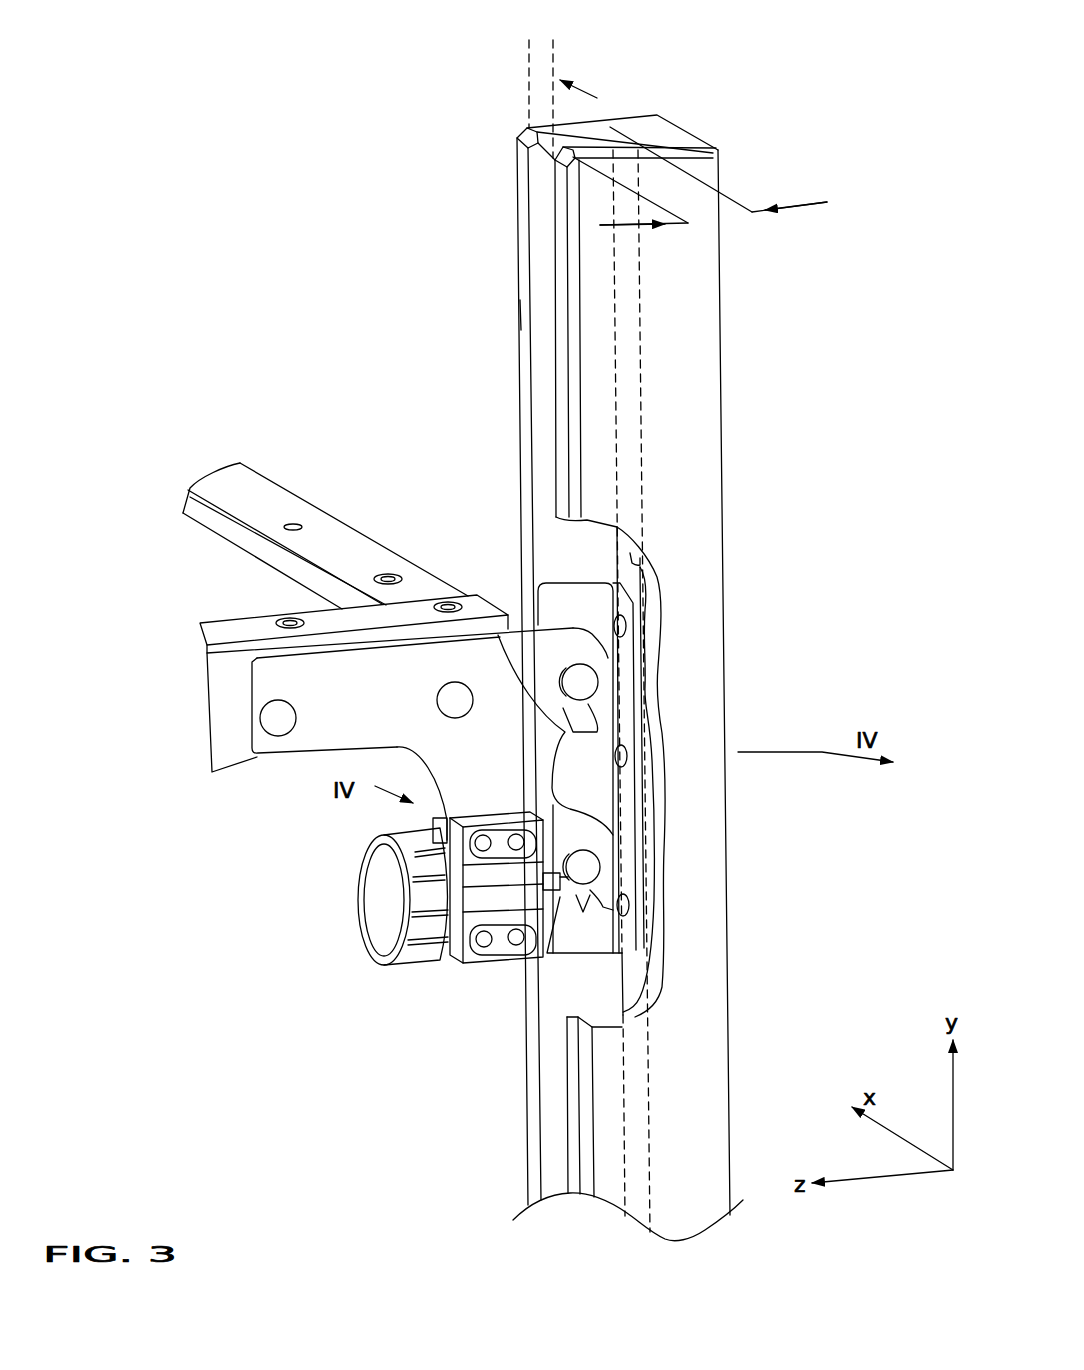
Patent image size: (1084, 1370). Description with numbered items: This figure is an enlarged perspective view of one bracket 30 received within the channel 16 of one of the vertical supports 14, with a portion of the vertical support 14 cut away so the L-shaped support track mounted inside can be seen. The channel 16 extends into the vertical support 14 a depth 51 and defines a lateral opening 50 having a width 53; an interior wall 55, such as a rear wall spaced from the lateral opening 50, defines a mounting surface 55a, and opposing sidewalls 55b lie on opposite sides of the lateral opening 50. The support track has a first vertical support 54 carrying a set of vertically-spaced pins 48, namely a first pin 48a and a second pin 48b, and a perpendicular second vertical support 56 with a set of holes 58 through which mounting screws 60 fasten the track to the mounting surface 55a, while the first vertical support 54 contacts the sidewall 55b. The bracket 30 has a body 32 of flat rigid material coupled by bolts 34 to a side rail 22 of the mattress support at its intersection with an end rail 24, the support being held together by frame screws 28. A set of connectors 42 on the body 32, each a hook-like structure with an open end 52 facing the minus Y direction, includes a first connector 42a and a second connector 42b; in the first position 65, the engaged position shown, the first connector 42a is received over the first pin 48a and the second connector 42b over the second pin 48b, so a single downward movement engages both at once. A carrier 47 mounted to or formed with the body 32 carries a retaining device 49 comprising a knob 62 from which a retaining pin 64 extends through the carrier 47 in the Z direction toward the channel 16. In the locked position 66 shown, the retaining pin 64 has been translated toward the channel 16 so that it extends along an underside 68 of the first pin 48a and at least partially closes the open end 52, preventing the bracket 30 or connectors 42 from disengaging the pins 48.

The vertical support 14 is at (687, 123).
The channel 16 is at (603, 137).
The side rail 22 is at (237, 635).
The end rail 24 is at (240, 487).
The frame screws 28 is at (375, 578).
The bracket 30 is at (338, 723).
The body 32 is at (508, 766).
The bolts 34 is at (278, 712).
The set of connectors 42 is at (598, 650).
The first connector 42a is at (603, 885).
The second connector 42b is at (605, 665).
The carrier 47 is at (497, 900).
The set of vertically-spaced pins 48 is at (566, 653).
The first pin 48a is at (583, 867).
The second pin 48b is at (582, 682).
The retaining device 49 is at (380, 900).
The lateral opening 50 is at (547, 237).
The depth 51 is at (707, 217).
The open end 52 is at (576, 709).
The width 53 is at (522, 66).
The first vertical support 54 is at (573, 595).
The interior wall 55 is at (540, 280).
The mounting surface 55a is at (633, 567).
The sidewalls 55b is at (573, 1105).
The second vertical support 56 is at (623, 670).
The holes 58 is at (624, 762).
The mounting screws 60 is at (650, 808).
The knob 62 is at (430, 935).
The retaining pin 64 is at (583, 897).
The first position 65 is at (325, 830).
The locked position 66 is at (588, 968).
The underside 68 is at (590, 913).